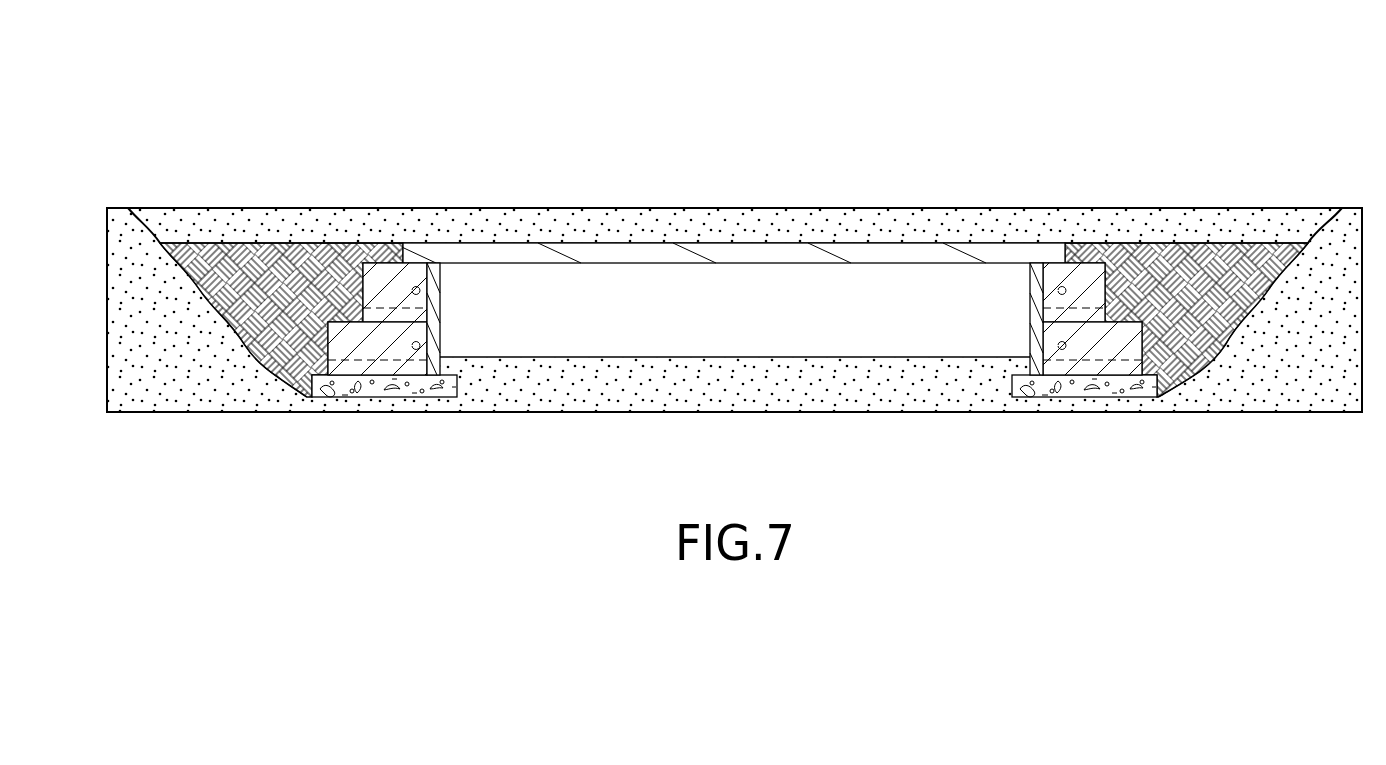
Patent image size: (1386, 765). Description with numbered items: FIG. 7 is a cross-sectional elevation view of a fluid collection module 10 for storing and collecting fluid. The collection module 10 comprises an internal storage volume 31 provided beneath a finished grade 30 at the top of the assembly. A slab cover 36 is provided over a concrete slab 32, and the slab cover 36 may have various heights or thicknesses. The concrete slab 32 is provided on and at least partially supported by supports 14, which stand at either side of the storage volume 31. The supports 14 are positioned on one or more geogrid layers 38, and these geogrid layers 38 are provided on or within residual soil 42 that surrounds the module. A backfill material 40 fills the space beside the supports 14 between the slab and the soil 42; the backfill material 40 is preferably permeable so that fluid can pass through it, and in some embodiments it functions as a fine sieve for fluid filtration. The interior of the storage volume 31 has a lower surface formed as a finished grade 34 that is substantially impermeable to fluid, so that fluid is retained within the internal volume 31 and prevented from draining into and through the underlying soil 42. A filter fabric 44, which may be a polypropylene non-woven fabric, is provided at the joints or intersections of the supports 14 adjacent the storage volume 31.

The fluid collection module 10 is at (1012, 136).
The supports 14 is at (436, 290).
The finished grade 30 is at (748, 207).
The internal storage volume 31 is at (586, 300).
The concrete slab 32 is at (862, 257).
The finished grade 34 is at (800, 357).
The slab cover 36 is at (917, 217).
The geogrid layers 38 is at (400, 392).
The backfill material 40 is at (345, 256).
The residual soil 42 is at (1260, 395).
The filter fabric 44 is at (1058, 320).